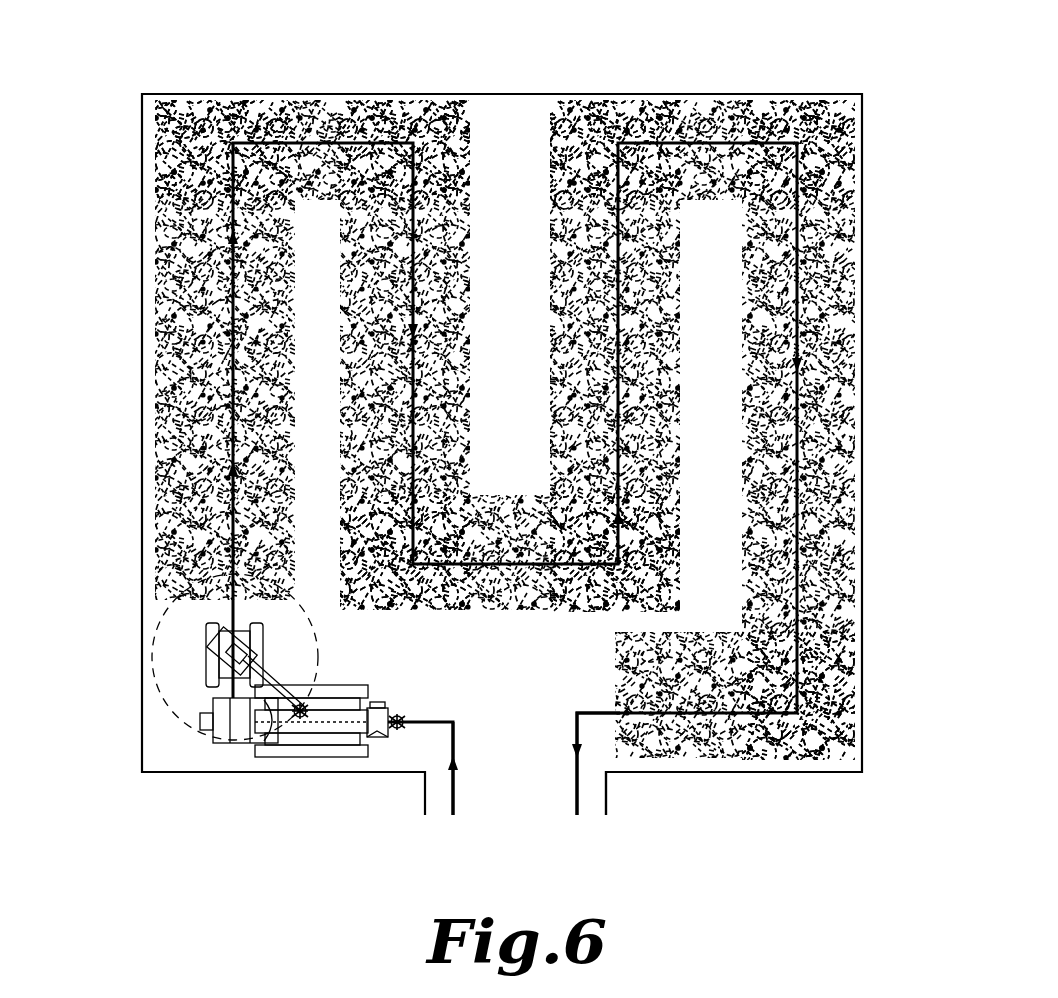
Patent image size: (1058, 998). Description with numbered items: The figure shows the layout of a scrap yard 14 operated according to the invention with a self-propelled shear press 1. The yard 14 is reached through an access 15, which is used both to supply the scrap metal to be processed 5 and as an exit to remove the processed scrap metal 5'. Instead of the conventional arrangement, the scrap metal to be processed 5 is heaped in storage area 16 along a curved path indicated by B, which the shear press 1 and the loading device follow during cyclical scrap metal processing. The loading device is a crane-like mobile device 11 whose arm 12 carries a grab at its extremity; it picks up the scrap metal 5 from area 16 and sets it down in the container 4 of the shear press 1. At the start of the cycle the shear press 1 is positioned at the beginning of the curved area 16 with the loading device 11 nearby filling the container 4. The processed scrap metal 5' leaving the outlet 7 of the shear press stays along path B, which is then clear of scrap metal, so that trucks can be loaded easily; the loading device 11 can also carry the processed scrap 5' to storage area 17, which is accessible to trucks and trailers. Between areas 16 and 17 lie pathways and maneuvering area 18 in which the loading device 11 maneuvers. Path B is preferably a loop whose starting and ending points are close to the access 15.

The shear press container 1 is at (328, 733).
The container 4 is at (297, 707).
The scrap metal to be processed 5 is at (480, 384).
The processed scrap metal 5' is at (482, 802).
The outlet 7 is at (388, 717).
The crane-like mobile device 11 is at (157, 627).
The arm 12 is at (242, 688).
The yard 14 is at (862, 128).
The access 15 is at (592, 793).
The storage area 16 is at (203, 172).
The storage area 17 is at (403, 757).
The pathways and maneuvering area 18 is at (312, 363).
The curved path B is at (598, 712).